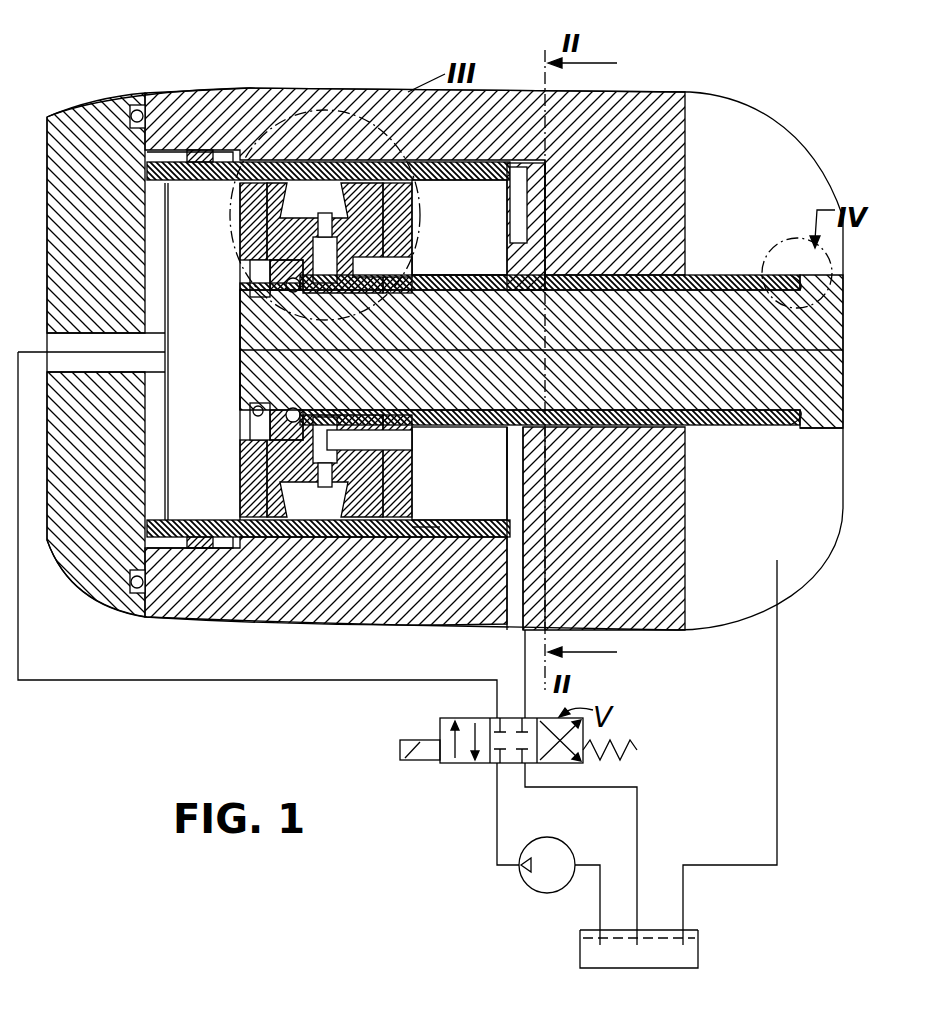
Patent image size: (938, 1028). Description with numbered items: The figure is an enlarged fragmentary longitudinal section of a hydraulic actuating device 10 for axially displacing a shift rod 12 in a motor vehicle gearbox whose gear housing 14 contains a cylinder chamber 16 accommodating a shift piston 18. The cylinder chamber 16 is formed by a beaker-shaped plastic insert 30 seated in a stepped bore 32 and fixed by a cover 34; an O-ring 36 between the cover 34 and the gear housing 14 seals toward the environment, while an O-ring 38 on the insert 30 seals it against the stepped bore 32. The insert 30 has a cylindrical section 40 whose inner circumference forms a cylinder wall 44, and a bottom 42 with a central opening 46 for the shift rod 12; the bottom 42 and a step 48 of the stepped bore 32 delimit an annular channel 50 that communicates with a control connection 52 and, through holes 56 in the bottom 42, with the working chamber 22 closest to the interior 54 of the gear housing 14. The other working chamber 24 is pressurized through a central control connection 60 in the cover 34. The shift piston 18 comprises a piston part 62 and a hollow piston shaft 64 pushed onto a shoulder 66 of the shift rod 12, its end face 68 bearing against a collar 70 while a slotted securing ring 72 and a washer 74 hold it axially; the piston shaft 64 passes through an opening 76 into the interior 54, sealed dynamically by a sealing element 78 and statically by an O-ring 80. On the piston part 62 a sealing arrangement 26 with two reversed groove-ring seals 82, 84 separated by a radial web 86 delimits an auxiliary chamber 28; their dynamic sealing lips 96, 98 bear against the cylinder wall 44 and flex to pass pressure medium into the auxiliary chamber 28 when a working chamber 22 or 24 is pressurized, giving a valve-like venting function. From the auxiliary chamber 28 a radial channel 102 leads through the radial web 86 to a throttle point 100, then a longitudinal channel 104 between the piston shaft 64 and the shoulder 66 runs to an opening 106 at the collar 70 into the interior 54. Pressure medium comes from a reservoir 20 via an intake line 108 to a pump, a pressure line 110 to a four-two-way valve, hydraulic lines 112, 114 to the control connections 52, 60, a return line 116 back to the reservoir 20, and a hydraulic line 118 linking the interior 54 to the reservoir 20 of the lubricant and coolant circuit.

The hydraulic actuating device 10 is at (262, 178).
The shift rod 12 is at (818, 327).
The gear housing 14 is at (612, 100).
The cylinder chamber 16 is at (167, 240).
The shift piston 18 is at (257, 537).
The reservoir 20 is at (673, 957).
The working chamber 22 is at (493, 221).
The working chamber 24 is at (207, 224).
The sealing arrangement 26 is at (298, 165).
The auxiliary chamber 28 is at (307, 538).
The insert 30 is at (170, 605).
The stepped bore 32 is at (334, 520).
The cover 34 is at (88, 122).
The O-ring 36 is at (136, 106).
The O-ring 38 is at (200, 150).
The cylindrical section 40 is at (443, 530).
The bottom 42 is at (507, 450).
The cylinder wall 44 is at (425, 525).
The central opening 46 is at (459, 257).
The step 48 is at (533, 165).
The annular channel 50 is at (530, 170).
The control connection 52 is at (517, 600).
The interior 54 is at (777, 501).
The holes 56 is at (548, 230).
The control connection 60 is at (55, 340).
The piston part 62 is at (270, 440).
The piston shaft 64 is at (683, 275).
The shoulder 66 is at (286, 415).
The end face 68 is at (803, 428).
The collar 70 is at (803, 404).
The slotted securing ring 72 is at (253, 406).
The washer 74 is at (252, 348).
The opening 76 is at (677, 427).
The sealing element 78 is at (507, 440).
The O-ring 80 is at (262, 298).
The seal 82 is at (360, 185).
The seal 84 is at (322, 212).
The radial web 86 is at (330, 480).
The dynamic sealing lip 96 is at (352, 512).
The dynamic sealing lip 98 is at (252, 491).
The throttle point 100 is at (250, 280).
The channel 102 is at (265, 262).
The channel 104 is at (414, 244).
The opening 106 is at (787, 273).
The intake line 108 is at (598, 898).
The pressure line 110 is at (497, 808).
The hydraulic line 112 is at (525, 700).
The hydraulic line 114 is at (293, 681).
The return line 116 is at (637, 853).
The hydraulic line 118 is at (777, 747).